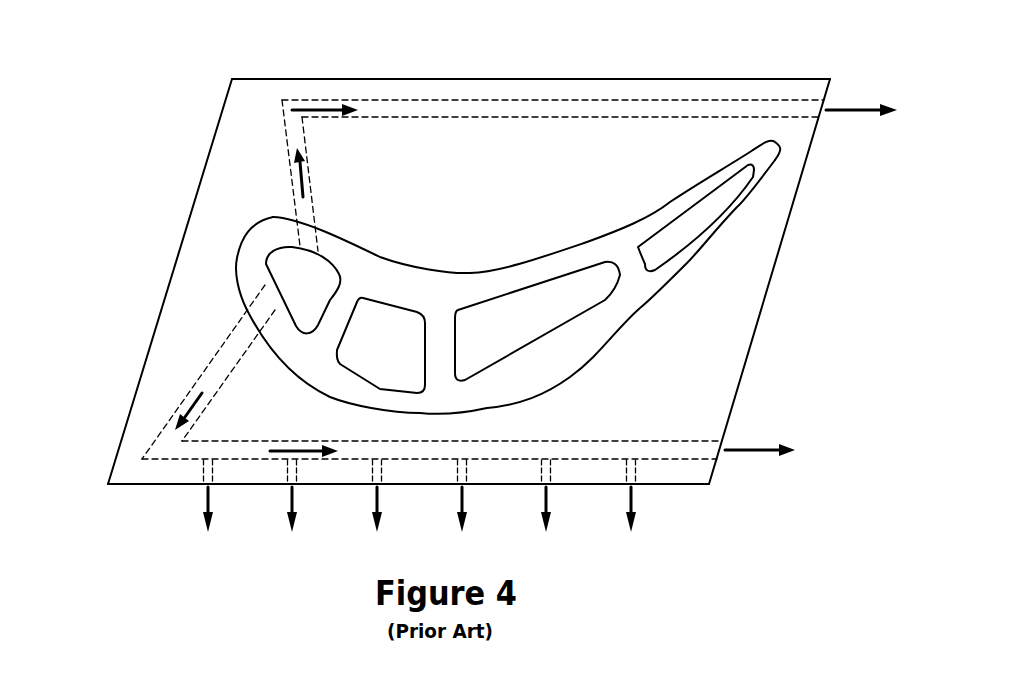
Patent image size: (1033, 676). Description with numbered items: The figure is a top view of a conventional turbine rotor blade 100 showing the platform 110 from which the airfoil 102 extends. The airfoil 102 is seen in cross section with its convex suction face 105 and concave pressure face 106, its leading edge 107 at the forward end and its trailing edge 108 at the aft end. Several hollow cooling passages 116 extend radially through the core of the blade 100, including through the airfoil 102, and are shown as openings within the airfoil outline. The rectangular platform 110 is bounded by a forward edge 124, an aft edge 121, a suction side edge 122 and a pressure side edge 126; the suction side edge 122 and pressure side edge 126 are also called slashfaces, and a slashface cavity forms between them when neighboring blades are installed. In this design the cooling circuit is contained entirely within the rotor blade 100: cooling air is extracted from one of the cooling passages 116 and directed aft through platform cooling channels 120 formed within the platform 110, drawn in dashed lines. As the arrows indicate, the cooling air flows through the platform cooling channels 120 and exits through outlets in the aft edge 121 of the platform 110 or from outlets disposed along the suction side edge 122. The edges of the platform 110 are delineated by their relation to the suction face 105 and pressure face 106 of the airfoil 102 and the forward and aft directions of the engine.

The turbine rotor blade 100 is at (134, 83).
The airfoil 102 is at (209, 248).
The suction face 105 is at (502, 396).
The pressure face 106 is at (515, 269).
The leading edge 107 is at (240, 246).
The trailing edge 108 is at (782, 148).
The platform 110 is at (205, 337).
The cooling passages 116 is at (321, 297).
The platform cooling channels 120 is at (412, 100).
The aft edge 121 is at (757, 325).
The suction side edge 122 is at (150, 485).
The forward edge 124 is at (161, 308).
The pressure side edge 126 is at (733, 79).